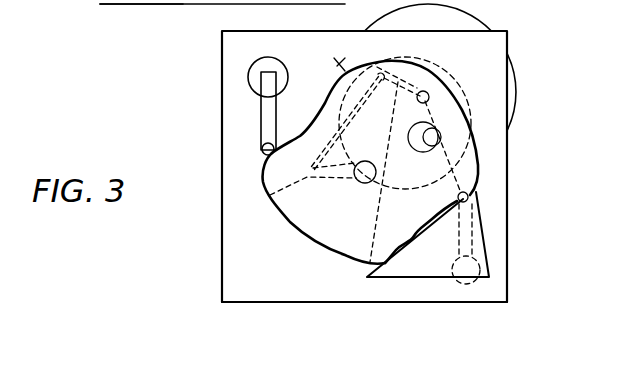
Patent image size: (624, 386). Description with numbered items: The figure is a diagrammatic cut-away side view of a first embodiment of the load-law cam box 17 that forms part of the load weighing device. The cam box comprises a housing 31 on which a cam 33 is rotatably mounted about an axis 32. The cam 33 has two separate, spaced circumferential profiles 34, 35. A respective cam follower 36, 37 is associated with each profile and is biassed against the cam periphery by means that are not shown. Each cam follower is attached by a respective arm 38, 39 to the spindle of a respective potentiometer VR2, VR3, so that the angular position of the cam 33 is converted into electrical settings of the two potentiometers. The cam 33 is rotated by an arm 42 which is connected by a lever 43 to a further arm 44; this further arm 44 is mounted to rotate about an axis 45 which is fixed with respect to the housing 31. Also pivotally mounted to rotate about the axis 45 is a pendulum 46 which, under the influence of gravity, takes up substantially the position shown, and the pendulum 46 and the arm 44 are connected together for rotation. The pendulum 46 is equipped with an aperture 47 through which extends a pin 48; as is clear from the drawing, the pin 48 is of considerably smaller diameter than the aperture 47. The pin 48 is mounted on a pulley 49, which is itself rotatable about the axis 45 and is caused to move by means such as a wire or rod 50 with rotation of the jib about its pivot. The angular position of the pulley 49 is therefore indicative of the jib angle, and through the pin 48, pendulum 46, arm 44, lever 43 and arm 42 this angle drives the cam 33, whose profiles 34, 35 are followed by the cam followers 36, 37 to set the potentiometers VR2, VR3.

The cam box 17 is at (214, 241).
The housing 31 is at (361, 302).
The axis 32 is at (362, 184).
The cam 33 is at (307, 248).
The circumferential profile 34 is at (320, 108).
The circumferential profile 35 is at (413, 240).
The cam follower 36 is at (263, 148).
The cam follower 37 is at (469, 196).
The arm 38 is at (267, 107).
The arm 39 is at (474, 231).
The arm 42 is at (270, 195).
The lever 43 is at (353, 38).
The further arm 44 is at (408, 61).
The axis 45 is at (427, 93).
The pendulum 46 is at (443, 276).
The aperture 47 is at (428, 146).
The pin 48 is at (440, 134).
The pulley 49 is at (459, 28).
The wire or rod 50 is at (196, 5).
The potentiometer VR2 is at (248, 73).
The potentiometer VR3 is at (470, 287).